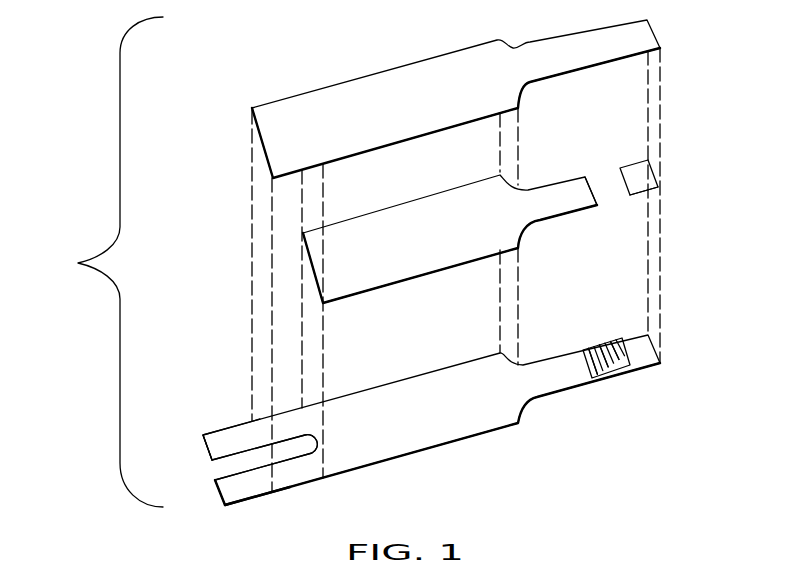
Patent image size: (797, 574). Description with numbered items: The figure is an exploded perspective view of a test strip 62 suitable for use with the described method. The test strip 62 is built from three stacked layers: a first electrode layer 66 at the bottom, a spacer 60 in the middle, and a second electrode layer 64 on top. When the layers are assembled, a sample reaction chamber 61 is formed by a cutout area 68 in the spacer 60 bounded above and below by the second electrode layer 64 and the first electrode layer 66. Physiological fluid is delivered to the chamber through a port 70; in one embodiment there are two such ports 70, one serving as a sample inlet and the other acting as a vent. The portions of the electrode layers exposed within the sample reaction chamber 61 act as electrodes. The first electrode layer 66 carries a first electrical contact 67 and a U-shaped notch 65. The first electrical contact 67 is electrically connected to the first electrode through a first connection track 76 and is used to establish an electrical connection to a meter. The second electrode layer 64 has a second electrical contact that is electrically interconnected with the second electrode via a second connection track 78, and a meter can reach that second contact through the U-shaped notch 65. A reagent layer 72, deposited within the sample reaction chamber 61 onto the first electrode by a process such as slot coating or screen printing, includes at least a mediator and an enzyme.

The test strip 62 is at (96, 262).
The second electrode layer 64 is at (228, 152).
The second connection track 78 is at (396, 80).
The spacer 60 is at (426, 228).
The port 70 is at (595, 158).
The cutout area 68 is at (611, 181).
The sample reaction chamber 61 is at (615, 197).
The first connection track 76 is at (435, 412).
The first electrical contact 67 is at (215, 447).
The first electrode layer 66 is at (196, 478).
The U-shaped notch 65 is at (287, 460).
The reagent layer 72 is at (630, 363).